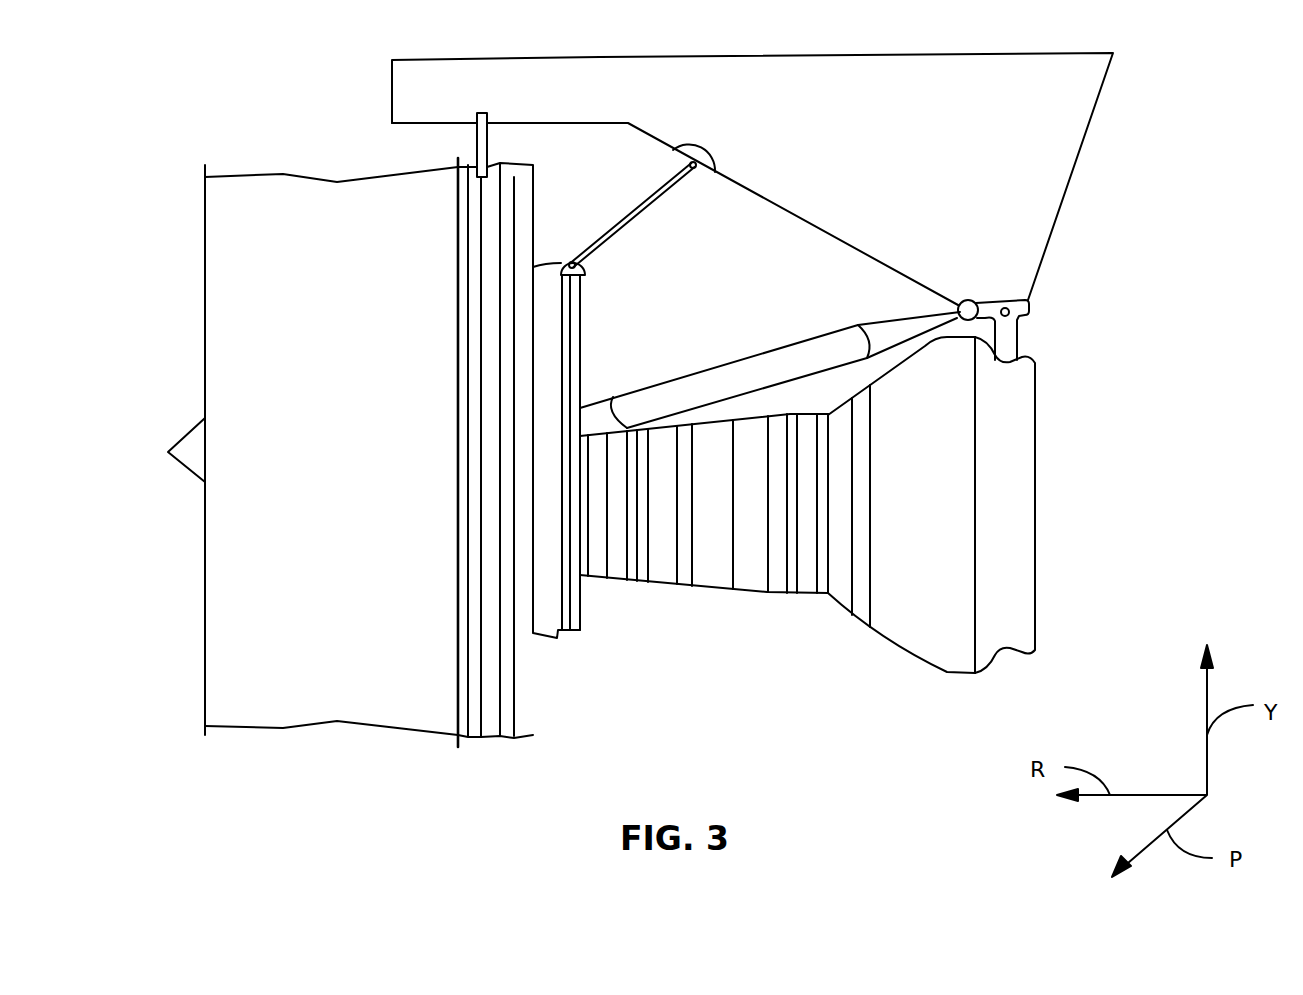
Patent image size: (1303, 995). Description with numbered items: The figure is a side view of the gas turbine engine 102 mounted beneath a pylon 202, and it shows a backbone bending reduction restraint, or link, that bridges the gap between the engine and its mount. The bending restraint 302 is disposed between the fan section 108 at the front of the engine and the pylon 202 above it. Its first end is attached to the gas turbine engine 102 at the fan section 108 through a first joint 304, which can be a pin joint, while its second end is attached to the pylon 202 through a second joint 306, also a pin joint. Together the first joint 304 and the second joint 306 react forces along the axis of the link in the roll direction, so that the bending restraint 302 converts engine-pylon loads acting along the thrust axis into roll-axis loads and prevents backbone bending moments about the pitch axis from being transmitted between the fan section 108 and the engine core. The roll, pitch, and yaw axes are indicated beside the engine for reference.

The gas turbine engine 102 is at (542, 414).
The fan section 108 is at (205, 312).
The pylon 202 is at (672, 53).
The bending restraint 302 is at (648, 195).
The first joint 304 is at (582, 278).
The second joint 306 is at (697, 178).